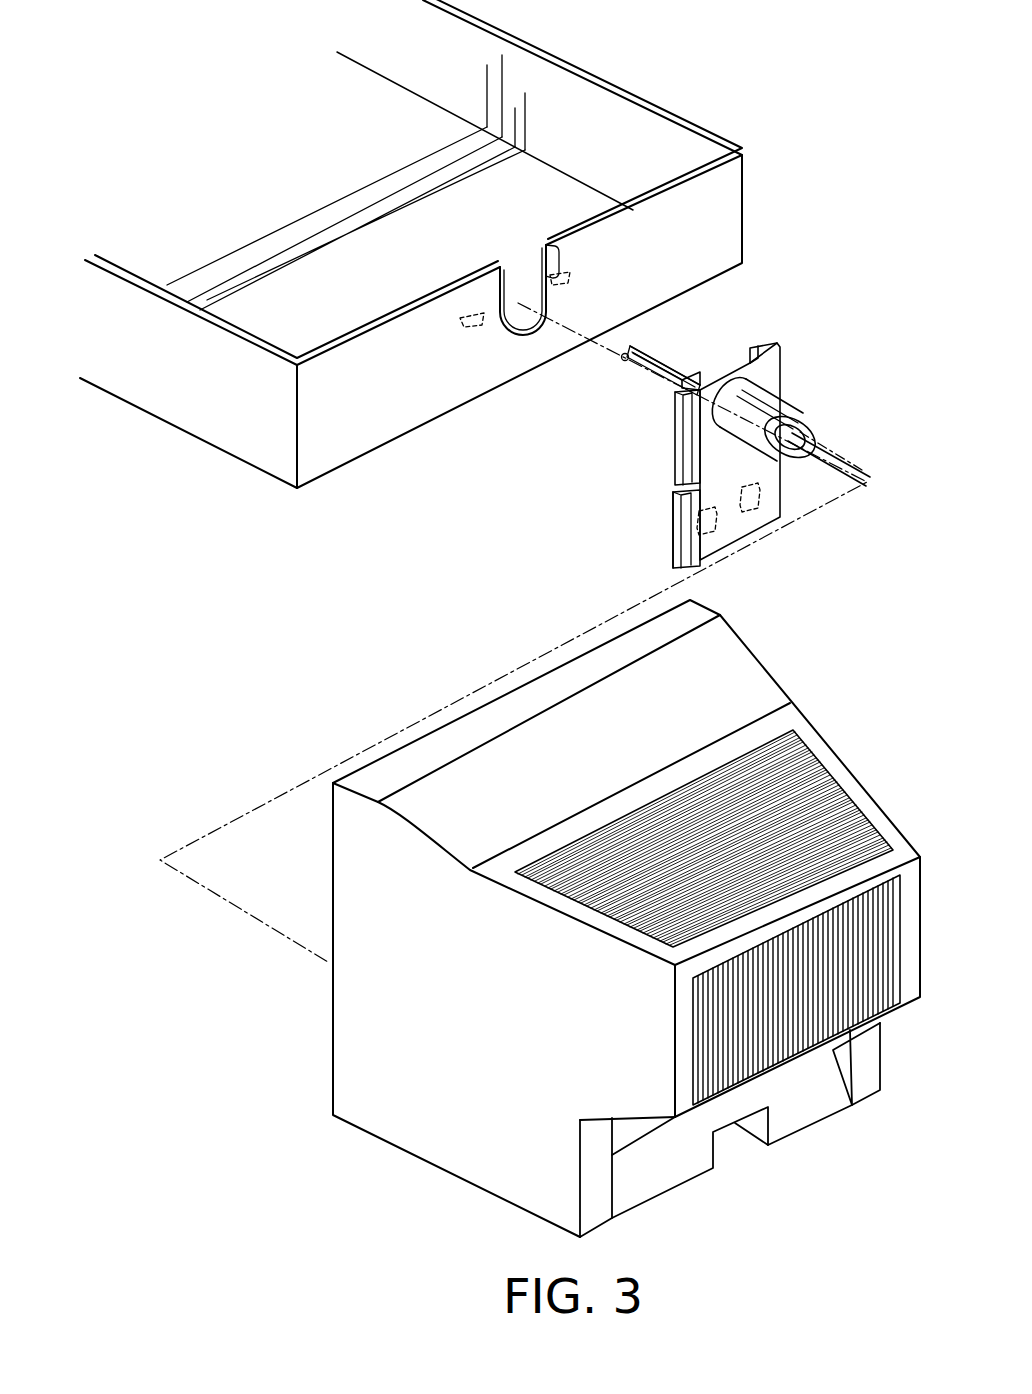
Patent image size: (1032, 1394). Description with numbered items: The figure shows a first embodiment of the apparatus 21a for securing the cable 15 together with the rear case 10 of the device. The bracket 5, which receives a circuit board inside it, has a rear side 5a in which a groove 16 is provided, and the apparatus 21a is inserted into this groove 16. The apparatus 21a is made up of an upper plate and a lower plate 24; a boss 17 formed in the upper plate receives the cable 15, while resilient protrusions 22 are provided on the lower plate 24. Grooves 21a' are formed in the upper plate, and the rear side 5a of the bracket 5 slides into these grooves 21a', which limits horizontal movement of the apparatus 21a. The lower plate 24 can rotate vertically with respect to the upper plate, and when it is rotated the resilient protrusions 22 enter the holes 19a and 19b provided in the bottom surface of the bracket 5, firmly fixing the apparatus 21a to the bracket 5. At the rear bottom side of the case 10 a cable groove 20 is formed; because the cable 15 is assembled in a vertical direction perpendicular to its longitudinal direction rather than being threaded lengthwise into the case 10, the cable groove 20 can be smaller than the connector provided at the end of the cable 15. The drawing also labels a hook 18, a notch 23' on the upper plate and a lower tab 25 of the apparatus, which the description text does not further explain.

The bracket 5 is at (722, 120).
The rear side of the bracket 5a is at (728, 202).
The rear case 10 is at (320, 1115).
The cable 15 is at (630, 362).
The groove 16 is at (523, 278).
The boss 17 is at (783, 417).
The hook 18 is at (547, 243).
The hole 19a is at (462, 325).
The hole 19b is at (551, 280).
The cable groove 20 is at (735, 1140).
The apparatus for securing the cable 21a is at (746, 371).
The grooves 21a' is at (719, 429).
The resilient protrusions 22 is at (760, 500).
The notch 23' is at (805, 360).
The lower plate 24 is at (742, 522).
The lower tab 25 is at (676, 497).